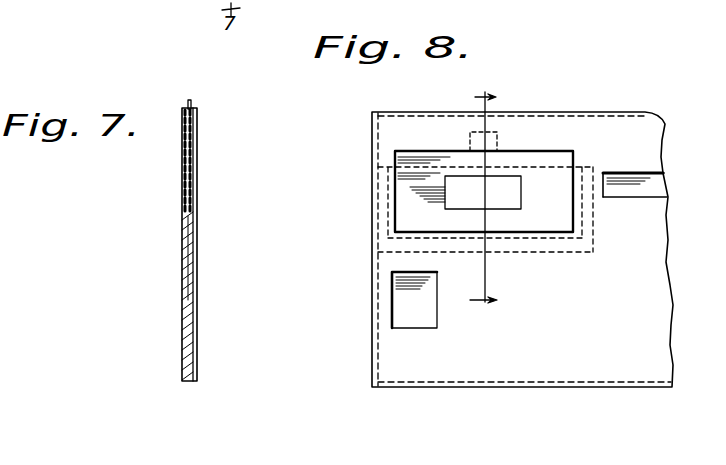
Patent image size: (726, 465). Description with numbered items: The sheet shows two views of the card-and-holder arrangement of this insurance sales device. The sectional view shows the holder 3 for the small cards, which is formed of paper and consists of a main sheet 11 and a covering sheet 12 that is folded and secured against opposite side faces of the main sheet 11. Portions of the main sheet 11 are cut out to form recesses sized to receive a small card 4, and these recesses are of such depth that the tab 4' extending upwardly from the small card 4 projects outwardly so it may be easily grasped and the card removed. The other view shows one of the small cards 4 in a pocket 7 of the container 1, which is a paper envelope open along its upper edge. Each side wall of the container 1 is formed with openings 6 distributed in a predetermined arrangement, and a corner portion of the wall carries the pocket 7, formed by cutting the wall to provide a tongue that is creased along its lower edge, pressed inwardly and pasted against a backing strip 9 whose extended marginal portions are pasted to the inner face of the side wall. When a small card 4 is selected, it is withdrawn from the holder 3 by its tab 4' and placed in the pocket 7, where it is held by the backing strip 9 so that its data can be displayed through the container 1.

In FIG. 8, the container 1 is at (391, 340).
In FIG. 7, the holder 3 is at (196, 272).
In FIG. 7, the small card 4 is at (213, 162).
In FIG. 8, the small card 4 is at (585, 157).
In FIG. 7, the tab 4' is at (215, 96).
In FIG. 8, the tab 4' is at (508, 137).
In FIG. 8, the opening 6 is at (633, 173).
In FIG. 8, the pocket 7 is at (573, 151).
In FIG. 8, the backing strip 9 is at (483, 200).
In FIG. 7, the main sheet 11 is at (187, 245).
In FIG. 7, the covering sheet 12 is at (196, 326).